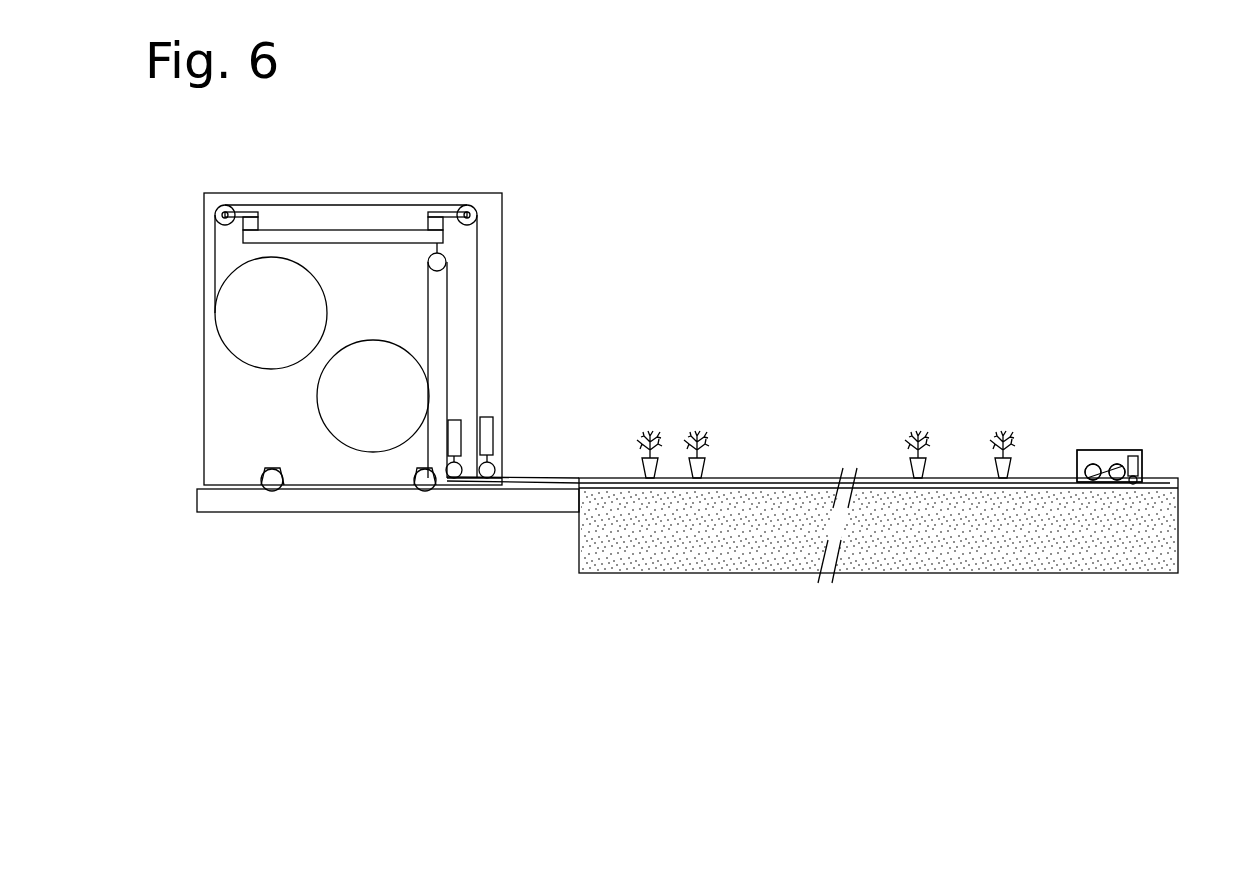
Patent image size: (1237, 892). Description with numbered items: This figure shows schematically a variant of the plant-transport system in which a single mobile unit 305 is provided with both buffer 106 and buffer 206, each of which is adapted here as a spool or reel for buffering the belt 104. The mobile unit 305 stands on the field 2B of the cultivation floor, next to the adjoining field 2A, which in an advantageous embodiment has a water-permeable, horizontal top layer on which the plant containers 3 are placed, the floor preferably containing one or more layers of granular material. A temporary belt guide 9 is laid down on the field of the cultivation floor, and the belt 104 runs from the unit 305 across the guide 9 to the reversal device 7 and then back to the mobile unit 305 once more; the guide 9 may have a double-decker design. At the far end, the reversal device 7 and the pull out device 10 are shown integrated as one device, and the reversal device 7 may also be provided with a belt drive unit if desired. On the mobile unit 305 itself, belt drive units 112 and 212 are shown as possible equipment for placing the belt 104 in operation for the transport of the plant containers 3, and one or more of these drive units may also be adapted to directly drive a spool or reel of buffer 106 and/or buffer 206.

The mobile unit 305 is at (516, 218).
The buffer 206 is at (248, 327).
The buffer 106 is at (378, 412).
The belt drive unit 112 is at (454, 420).
The belt drive unit 212 is at (487, 440).
The belt 104 is at (558, 479).
The field 2B is at (465, 498).
The field 2A is at (672, 533).
The temporary belt guide 9 is at (1157, 488).
The plant containers 3 is at (686, 464).
The reversal device 7 is at (1113, 449).
The pull out device 10 is at (1116, 442).